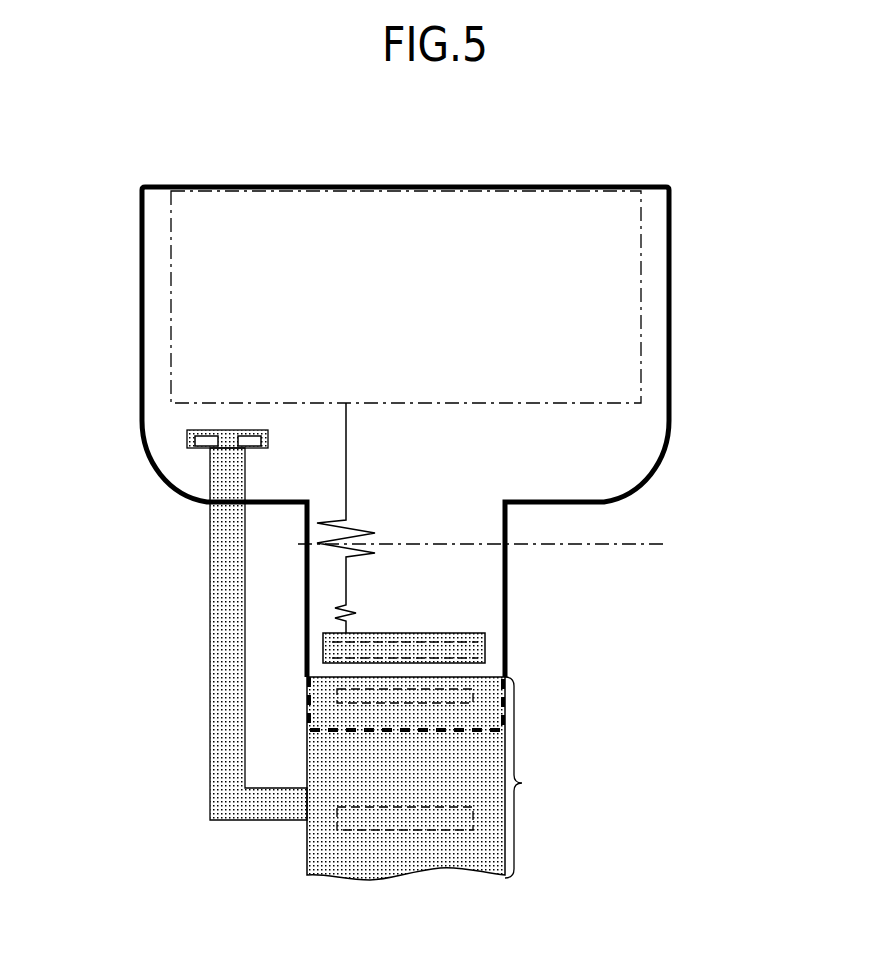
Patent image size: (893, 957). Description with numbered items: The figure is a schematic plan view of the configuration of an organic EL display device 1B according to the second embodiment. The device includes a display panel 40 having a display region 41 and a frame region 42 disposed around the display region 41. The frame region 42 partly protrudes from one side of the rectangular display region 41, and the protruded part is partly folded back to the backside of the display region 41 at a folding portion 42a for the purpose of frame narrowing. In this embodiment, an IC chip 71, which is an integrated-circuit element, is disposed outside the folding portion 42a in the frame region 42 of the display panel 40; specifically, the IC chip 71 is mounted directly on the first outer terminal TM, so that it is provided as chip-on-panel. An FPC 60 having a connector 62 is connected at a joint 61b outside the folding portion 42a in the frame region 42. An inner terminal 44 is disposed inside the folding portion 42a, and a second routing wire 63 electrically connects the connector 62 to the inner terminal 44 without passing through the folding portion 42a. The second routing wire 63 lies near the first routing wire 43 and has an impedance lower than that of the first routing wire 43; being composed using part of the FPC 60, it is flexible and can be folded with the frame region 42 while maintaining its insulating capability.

The organic EL display device 1B is at (705, 173).
The display panel 40 is at (677, 223).
The display region 41 is at (641, 295).
The frame region 42 is at (480, 600).
The folding portion 42a is at (623, 545).
The first routing wire 43 is at (347, 501).
The inner terminal 44 is at (187, 433).
The FPC 60 is at (431, 778).
The joint 61b is at (510, 695).
The connector 62 is at (440, 820).
The second routing wire 63 is at (223, 633).
The IC chip 71 is at (485, 643).
The first outer terminal TM is at (483, 616).